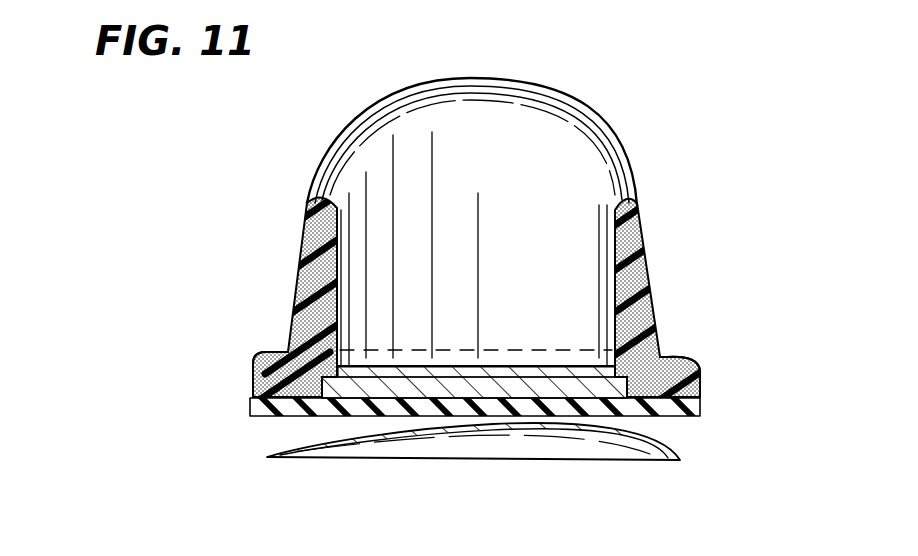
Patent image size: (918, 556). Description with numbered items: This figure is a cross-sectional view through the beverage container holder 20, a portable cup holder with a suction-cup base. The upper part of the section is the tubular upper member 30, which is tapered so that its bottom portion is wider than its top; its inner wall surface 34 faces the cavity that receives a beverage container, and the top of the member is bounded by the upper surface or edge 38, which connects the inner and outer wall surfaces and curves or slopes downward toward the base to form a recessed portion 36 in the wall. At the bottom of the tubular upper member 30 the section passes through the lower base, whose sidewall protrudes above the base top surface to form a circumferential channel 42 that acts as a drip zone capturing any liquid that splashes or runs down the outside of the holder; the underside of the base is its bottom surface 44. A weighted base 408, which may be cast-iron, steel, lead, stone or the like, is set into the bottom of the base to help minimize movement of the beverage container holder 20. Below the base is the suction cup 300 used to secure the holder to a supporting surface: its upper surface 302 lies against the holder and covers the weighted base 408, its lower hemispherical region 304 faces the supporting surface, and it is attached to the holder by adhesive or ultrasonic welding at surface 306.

The beverage container holder 20 is at (194, 303).
The tubular upper member 30 is at (655, 252).
The inner wall surface 34 is at (333, 297).
The recessed portion 36 is at (642, 176).
The upper surface or edge 38 is at (478, 76).
The circumferential channel 42 is at (662, 365).
The bottom surface 44 is at (655, 414).
The suction cup 300 is at (291, 455).
The upper surface 302 is at (258, 388).
The lower hemispherical region 304 is at (586, 443).
The attachment surface 306 is at (703, 400).
The weighted base 408 is at (480, 420).